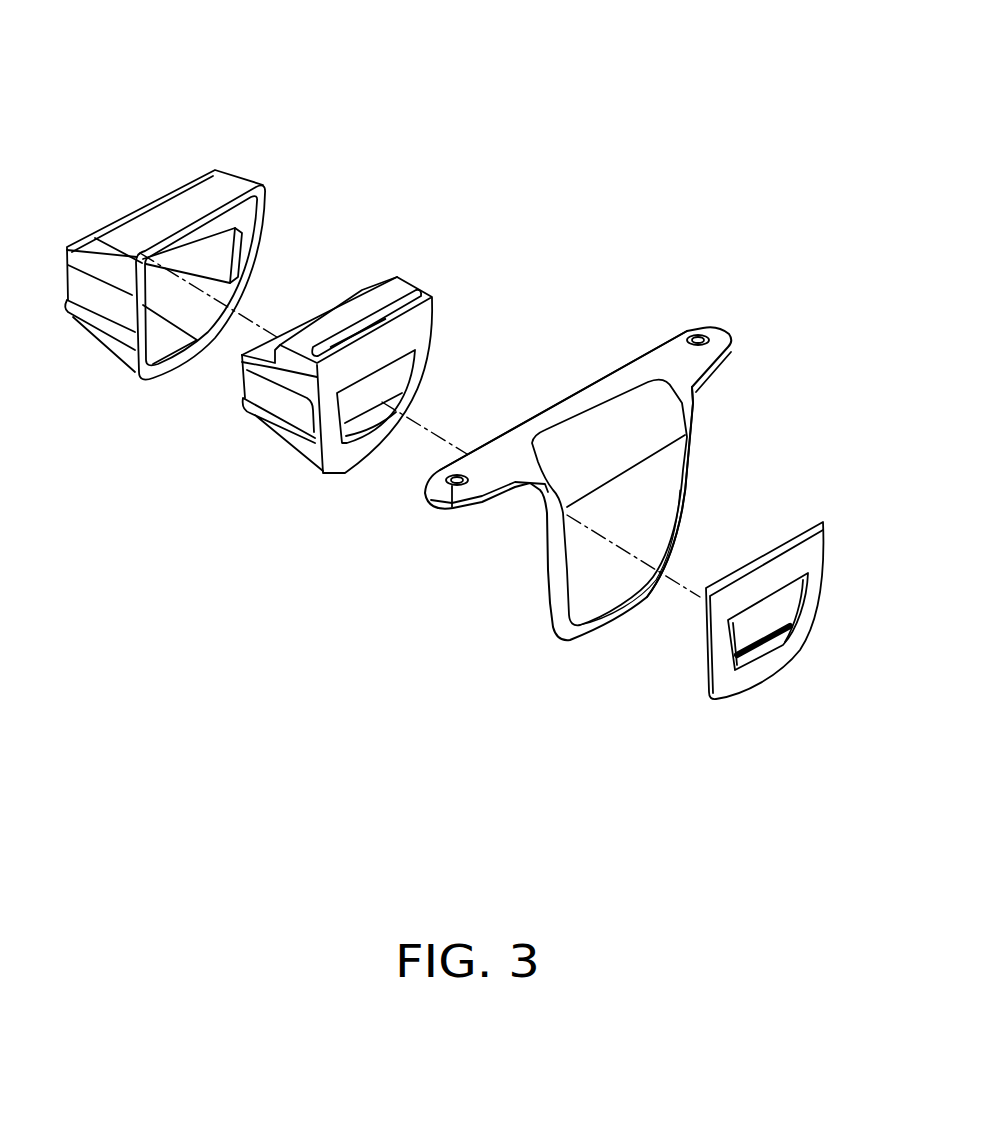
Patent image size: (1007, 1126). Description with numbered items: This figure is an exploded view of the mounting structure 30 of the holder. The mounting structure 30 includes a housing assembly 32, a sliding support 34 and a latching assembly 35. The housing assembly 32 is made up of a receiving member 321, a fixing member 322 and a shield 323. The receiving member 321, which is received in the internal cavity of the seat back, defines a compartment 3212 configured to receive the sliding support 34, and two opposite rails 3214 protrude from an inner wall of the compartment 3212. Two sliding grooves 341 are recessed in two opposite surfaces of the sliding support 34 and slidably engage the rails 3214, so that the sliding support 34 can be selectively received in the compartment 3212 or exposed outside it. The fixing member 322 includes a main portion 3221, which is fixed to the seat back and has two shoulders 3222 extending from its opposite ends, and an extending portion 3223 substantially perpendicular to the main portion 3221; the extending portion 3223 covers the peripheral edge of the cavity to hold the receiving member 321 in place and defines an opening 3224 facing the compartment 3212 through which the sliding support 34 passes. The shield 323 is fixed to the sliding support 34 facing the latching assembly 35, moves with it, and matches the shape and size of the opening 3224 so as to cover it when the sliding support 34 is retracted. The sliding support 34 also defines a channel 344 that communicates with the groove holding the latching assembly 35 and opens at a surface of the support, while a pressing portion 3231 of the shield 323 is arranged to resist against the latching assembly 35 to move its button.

The mounting structure 30 is at (533, 42).
The housing assembly 32 is at (878, 233).
The receiving member 321 is at (283, 224).
The compartment 3212 is at (200, 318).
The rails 3214 is at (212, 247).
The fixing member 322 is at (815, 284).
The main portion 3221 is at (637, 413).
The shoulders 3222 is at (680, 467).
The extending portion 3223 is at (472, 483).
The opening 3224 is at (638, 499).
The shield 323 is at (827, 508).
The pressing portion 3231 is at (767, 643).
The sliding support 34 is at (302, 468).
The sliding grooves 341 is at (290, 408).
The channel 344 is at (320, 348).
The latching assembly 35 is at (357, 423).